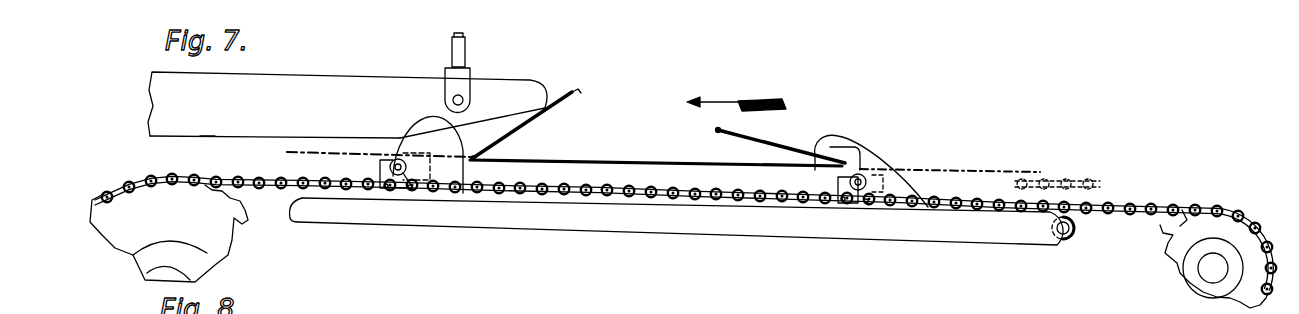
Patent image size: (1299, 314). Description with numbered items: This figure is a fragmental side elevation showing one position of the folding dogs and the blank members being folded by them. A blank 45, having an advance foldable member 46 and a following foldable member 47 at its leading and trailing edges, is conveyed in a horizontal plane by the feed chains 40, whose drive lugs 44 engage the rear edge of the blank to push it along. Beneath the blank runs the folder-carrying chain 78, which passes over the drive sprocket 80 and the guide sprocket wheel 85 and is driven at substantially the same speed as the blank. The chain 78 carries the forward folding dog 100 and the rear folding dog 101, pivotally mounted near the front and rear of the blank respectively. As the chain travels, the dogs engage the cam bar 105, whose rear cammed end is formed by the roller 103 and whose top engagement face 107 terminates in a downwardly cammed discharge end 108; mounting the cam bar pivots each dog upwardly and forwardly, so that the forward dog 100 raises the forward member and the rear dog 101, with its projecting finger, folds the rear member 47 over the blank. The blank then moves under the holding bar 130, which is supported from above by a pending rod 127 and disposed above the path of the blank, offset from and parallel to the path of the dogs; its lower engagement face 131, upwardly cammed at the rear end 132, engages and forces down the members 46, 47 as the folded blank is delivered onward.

The holding bar 130 is at (347, 105).
The lower engagement face 131 is at (208, 140).
The pivot pin 127 is at (462, 55).
The rear end 132 is at (484, 121).
The forward folding dog 100 is at (421, 154).
The advance foldable member 46 is at (529, 113).
The blank 45 is at (610, 161).
The following foldable member 47 is at (767, 139).
The rear folding dog 101 is at (880, 160).
The drive lugs 44 is at (1039, 170).
The feed chains 40 is at (1095, 180).
The top engagement face 107 is at (700, 206).
The folder-carrying chain 78 is at (1140, 217).
The cam bar 105 is at (827, 233).
The discharge end 108 is at (304, 199).
The roller 103 is at (1073, 250).
The drive sprocket 80 is at (240, 220).
The guide sprocket wheel 85 is at (1177, 250).